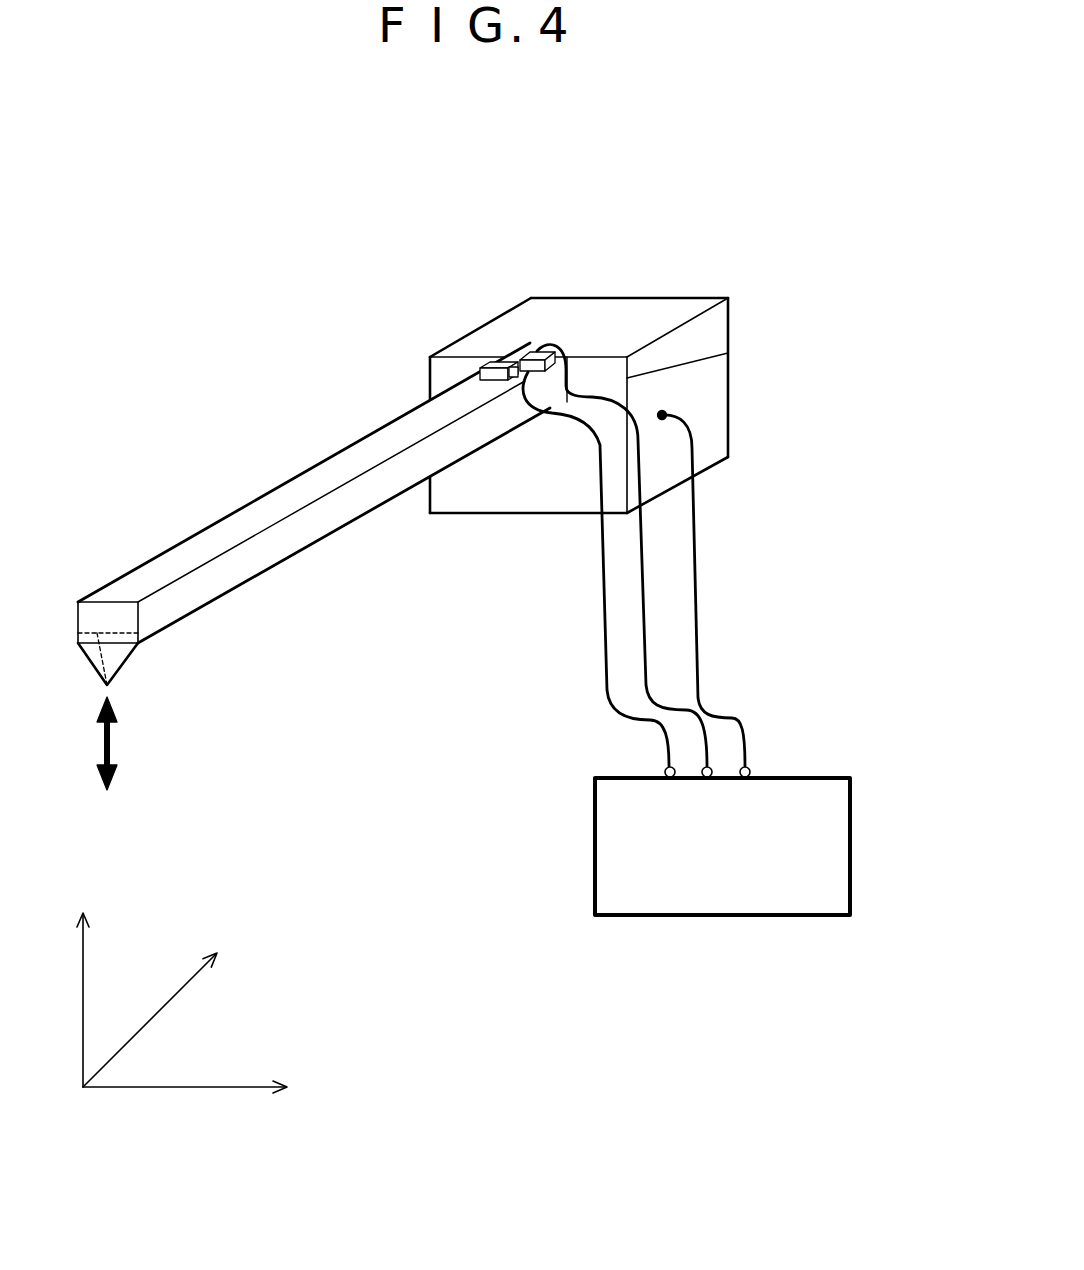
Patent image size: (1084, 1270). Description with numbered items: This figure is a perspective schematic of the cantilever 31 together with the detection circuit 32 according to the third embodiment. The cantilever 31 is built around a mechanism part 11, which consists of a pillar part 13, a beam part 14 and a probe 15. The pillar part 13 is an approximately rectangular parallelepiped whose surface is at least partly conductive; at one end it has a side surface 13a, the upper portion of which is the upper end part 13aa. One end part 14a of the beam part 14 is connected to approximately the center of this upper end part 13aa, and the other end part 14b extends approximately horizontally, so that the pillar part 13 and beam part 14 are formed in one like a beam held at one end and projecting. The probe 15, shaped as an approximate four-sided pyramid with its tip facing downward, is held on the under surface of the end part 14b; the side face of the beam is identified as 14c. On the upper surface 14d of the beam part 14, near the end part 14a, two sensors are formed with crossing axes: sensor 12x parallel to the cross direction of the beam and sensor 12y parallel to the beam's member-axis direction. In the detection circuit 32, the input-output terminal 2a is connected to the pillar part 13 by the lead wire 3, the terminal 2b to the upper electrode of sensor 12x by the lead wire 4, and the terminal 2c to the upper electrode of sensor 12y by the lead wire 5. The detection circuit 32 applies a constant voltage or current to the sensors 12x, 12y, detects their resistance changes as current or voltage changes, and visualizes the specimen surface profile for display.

The input-output terminal 2a is at (752, 768).
The input-output terminal 2b is at (664, 768).
The input-output terminal 2c is at (708, 768).
The lead wire 3 is at (694, 548).
The lead wire 4 is at (607, 677).
The lead wire 5 is at (645, 650).
The mechanism part 11 is at (360, 550).
The sensor 12x is at (505, 338).
The sensor 12y is at (537, 338).
The pillar part 13 is at (642, 308).
The side surface 13a is at (607, 370).
The upper end part 13aa is at (600, 371).
The beam part 14 is at (240, 565).
The one end part 14a is at (503, 361).
The another end part 14b is at (150, 613).
The front side surface of stylus arm 14c is at (383, 483).
The upper surface 14d is at (263, 508).
The probe 15 is at (117, 676).
The cantilever 31 is at (308, 437).
The detection circuit 32 is at (852, 830).